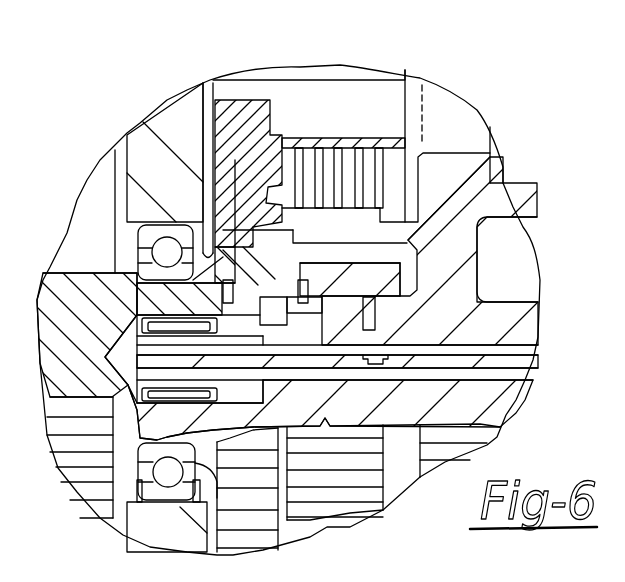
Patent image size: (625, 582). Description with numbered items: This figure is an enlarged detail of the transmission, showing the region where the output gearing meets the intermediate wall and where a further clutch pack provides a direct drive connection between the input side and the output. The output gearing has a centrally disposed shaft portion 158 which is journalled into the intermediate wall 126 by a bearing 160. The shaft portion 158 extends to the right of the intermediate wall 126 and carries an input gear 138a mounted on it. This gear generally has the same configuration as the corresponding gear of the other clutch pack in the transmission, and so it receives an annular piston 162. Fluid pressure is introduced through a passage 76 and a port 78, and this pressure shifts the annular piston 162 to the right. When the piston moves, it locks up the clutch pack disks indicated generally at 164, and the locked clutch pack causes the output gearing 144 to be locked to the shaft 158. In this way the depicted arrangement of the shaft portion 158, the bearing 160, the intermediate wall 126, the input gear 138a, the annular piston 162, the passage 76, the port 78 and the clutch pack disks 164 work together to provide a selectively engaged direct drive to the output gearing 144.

The passage 76 is at (440, 322).
The port 78 is at (257, 282).
The intermediate wall 126 is at (139, 140).
The input gear 138a is at (257, 131).
The output gearing 144 is at (463, 236).
The shaft portion 158 is at (97, 290).
The bearing 160 is at (150, 235).
The annular piston 162 is at (238, 168).
The clutch pack disks 164 is at (392, 156).